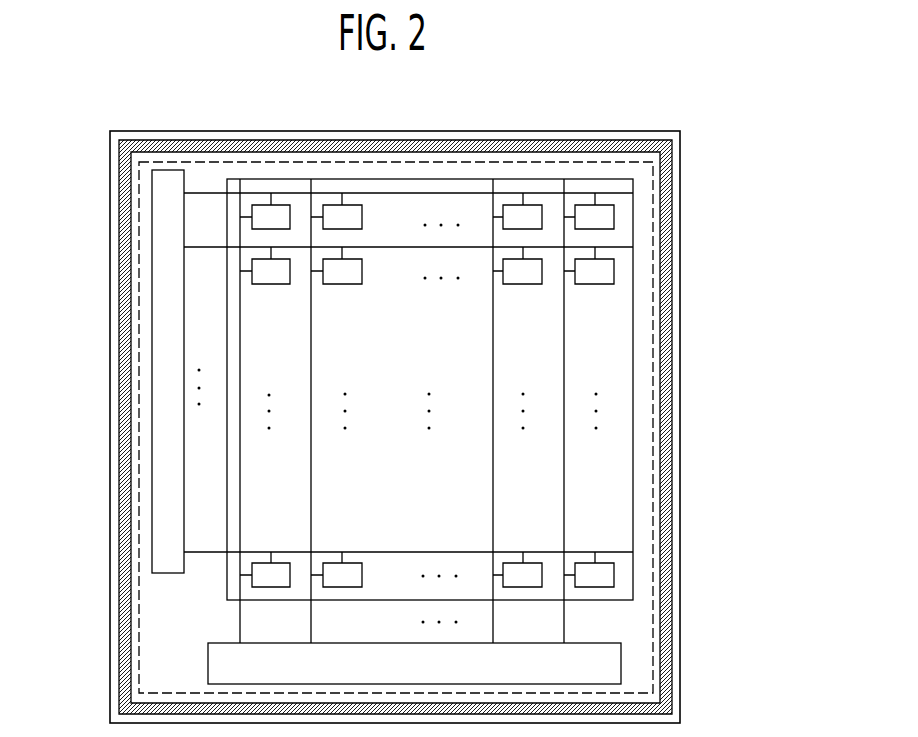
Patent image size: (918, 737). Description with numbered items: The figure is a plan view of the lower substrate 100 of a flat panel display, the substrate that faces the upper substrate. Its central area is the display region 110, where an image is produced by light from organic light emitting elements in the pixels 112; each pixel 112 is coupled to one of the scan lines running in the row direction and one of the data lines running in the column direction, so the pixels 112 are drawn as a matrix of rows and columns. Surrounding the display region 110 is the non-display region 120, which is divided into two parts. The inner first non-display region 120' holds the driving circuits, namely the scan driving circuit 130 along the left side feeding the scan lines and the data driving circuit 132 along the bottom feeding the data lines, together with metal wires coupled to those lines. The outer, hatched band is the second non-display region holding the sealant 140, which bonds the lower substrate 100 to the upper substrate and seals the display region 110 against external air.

The lower substrate 100 is at (552, 100).
The display region 110 is at (472, 362).
The pixel 112 is at (614, 218).
The non-display region 120 is at (519, 651).
The first non-display region 120' is at (497, 621).
The scan driving circuit 130 is at (173, 403).
The data driving circuit 132 is at (208, 663).
The sealant 140 is at (120, 210).